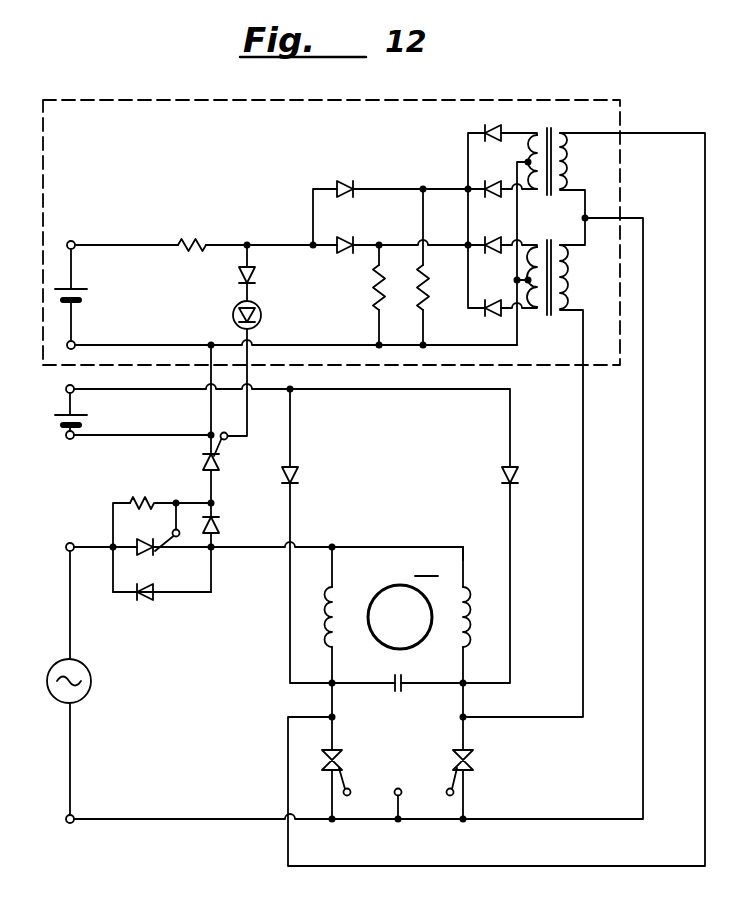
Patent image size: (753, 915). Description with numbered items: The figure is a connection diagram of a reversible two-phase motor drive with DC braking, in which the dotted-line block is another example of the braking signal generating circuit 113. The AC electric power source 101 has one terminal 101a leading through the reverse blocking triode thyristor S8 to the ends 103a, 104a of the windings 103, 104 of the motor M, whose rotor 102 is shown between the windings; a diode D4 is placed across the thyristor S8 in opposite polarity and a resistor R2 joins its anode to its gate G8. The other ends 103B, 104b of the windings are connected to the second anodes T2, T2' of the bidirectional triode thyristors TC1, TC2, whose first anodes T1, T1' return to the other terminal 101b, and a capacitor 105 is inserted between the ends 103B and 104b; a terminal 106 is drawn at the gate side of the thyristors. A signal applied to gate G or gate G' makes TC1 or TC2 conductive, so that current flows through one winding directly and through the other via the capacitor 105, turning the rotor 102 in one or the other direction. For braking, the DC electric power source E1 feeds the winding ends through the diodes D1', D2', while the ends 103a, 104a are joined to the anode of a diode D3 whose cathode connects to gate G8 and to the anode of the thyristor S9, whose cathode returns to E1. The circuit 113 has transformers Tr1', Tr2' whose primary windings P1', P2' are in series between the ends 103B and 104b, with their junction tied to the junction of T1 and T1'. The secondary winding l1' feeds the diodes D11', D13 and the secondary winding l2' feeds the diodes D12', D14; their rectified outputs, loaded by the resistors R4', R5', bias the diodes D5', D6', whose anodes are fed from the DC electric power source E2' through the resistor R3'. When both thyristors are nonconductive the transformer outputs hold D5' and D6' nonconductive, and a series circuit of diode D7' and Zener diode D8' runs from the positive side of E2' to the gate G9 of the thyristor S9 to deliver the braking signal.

The AC electric power source 101 is at (56, 664).
The power source terminal 101a is at (66, 544).
The power source terminal 101b is at (66, 817).
The rotor 102 is at (368, 588).
The winding 103 is at (322, 624).
The winding end 103a is at (332, 543).
The winding end 103B is at (307, 696).
The winding 104 is at (488, 617).
The winding end 104a is at (469, 536).
The winding end 104b is at (466, 687).
The capacitor 105 is at (392, 672).
The terminal 106 is at (401, 775).
The braking signal generating circuit 113 is at (672, 192).
The DC electric power source E1 is at (80, 419).
The DC electric power source E2' is at (89, 295).
The resistor R2 is at (137, 489).
The resistor R3' is at (195, 233).
The resistor R4' is at (405, 299).
The resistor R5' is at (359, 299).
The diode D1' is at (312, 476).
The diode D2' is at (491, 476).
The diode D3 is at (220, 527).
The diode D4 is at (146, 600).
The diode D5' is at (347, 175).
The diode D6' is at (340, 262).
The diode D7' is at (268, 275).
The Zener diode D8' is at (268, 315).
The diode D11' is at (466, 127).
The diode D12' is at (494, 321).
The diode D13 is at (468, 204).
The diode D14 is at (498, 238).
The reverse blocking triode thyristor S8 is at (146, 556).
The reverse blocking triode thyristor S9 is at (202, 462).
The gate G8 is at (161, 524).
The gate G9 is at (230, 430).
The transformer Tr1' is at (563, 149).
The transformer Tr2' is at (564, 266).
The secondary winding l1' is at (530, 149).
The secondary winding l2' is at (532, 262).
The primary winding P1' is at (584, 161).
The primary winding P2' is at (584, 277).
The bidirectional triode thyristor TC1 is at (341, 764).
The bidirectional triode thyristor TC2 is at (477, 766).
The first anode T1 is at (310, 791).
The second anode T2 is at (310, 736).
The first anode T1' is at (502, 797).
The second anode T2' is at (494, 736).
The gate G is at (357, 793).
The gate G' is at (440, 793).